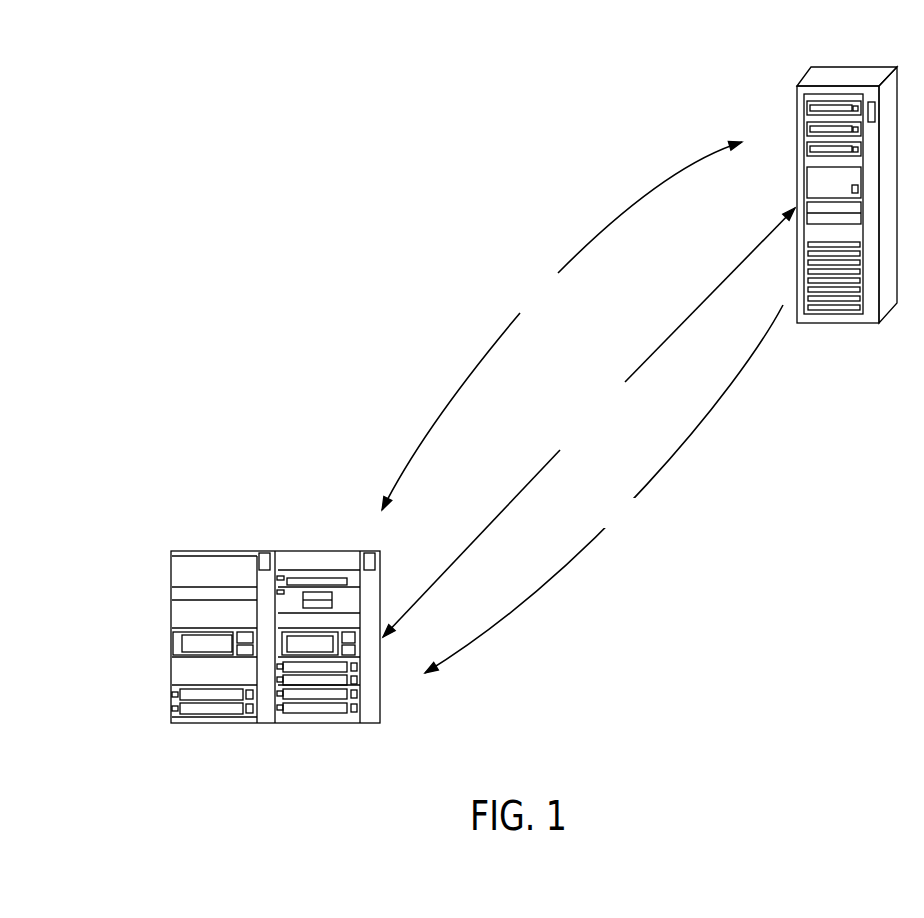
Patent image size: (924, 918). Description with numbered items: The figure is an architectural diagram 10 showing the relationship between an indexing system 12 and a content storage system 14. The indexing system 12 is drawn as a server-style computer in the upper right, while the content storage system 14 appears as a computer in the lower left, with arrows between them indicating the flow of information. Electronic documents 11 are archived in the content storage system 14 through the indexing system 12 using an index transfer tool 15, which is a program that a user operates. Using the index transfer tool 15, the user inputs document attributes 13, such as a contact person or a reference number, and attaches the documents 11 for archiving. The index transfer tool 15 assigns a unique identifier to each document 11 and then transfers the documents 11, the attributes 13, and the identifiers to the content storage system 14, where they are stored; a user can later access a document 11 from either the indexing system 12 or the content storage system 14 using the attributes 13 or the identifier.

The architectural diagram 10 is at (228, 250).
The documents 11 is at (522, 282).
The indexing system 12 is at (852, 72).
The document attributes 13 is at (725, 497).
The content storage system 14 is at (257, 551).
The index transfer tool 15 is at (552, 393).